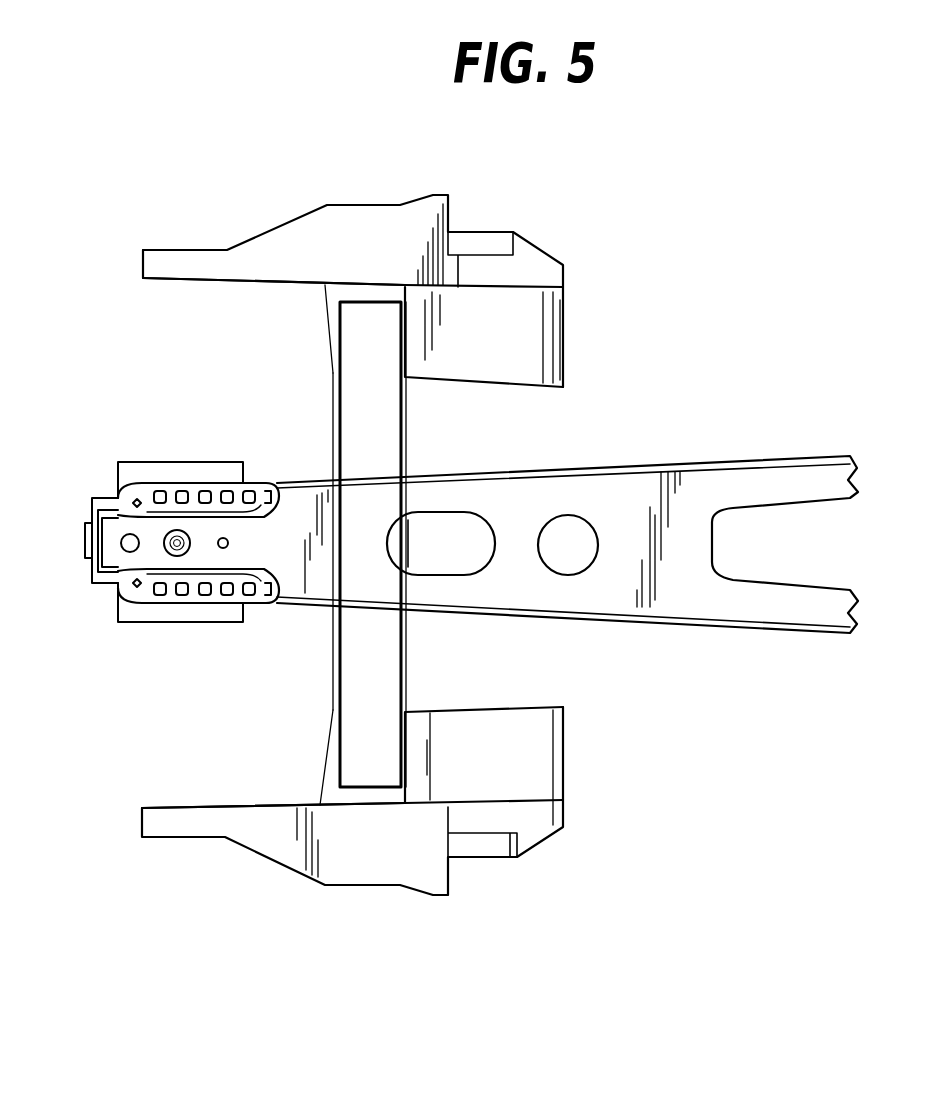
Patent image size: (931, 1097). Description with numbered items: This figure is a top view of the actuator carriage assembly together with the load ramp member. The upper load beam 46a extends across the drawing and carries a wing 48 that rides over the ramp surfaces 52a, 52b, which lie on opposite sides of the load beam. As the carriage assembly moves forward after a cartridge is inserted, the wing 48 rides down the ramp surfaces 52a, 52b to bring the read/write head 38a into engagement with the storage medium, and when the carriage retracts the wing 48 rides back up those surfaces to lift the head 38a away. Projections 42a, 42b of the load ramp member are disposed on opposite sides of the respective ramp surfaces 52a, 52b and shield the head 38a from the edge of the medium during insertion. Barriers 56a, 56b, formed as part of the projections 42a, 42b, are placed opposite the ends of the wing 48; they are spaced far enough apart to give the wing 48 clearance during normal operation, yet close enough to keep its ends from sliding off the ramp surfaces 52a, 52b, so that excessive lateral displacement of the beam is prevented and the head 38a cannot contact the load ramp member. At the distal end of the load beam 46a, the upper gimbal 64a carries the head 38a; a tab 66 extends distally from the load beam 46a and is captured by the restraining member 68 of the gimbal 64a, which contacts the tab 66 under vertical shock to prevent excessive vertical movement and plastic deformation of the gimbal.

The read/write head 38a is at (137, 462).
The projection 42a is at (197, 257).
The projection 42b is at (168, 827).
The upper load beam 46a is at (603, 482).
The wing 48 is at (383, 432).
The ramp surface 52a is at (413, 321).
The ramp surface 52b is at (413, 737).
The barrier 56a is at (215, 280).
The barrier 56b is at (198, 807).
The upper gimbal 64a is at (213, 493).
The tab 66 is at (85, 543).
The restraining member 68 is at (103, 497).